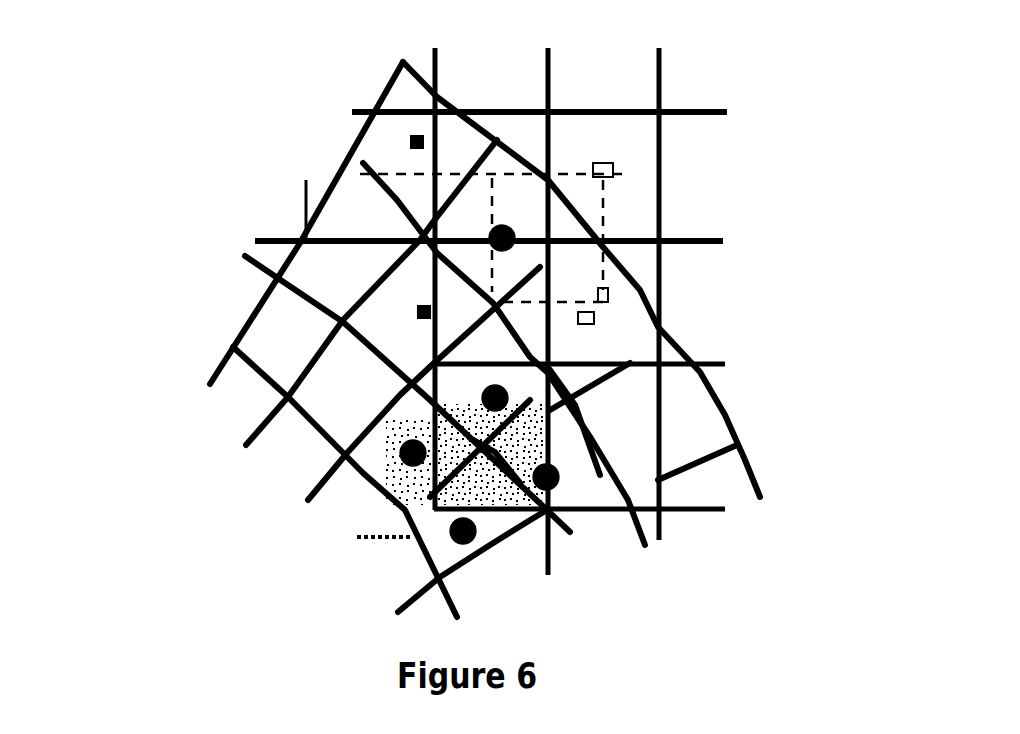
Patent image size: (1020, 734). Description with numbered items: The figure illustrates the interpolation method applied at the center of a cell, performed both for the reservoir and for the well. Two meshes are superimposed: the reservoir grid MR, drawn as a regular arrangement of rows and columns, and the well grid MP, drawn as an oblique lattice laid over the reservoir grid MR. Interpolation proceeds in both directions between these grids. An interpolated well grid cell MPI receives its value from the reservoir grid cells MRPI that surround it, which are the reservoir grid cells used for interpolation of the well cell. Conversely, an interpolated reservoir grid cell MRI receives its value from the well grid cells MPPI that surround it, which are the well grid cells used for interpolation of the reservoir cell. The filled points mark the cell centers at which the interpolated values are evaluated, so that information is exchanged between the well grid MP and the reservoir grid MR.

The well grid MP is at (218, 342).
The interpolated well grid cell MPI is at (480, 232).
The reservoir grid MR is at (715, 224).
The reservoir grid cells used for interpolation of MPI MRPI is at (628, 301).
The well grid cells used for interpolation of MRI MPPI is at (388, 472).
The interpolated reservoir grid cell MRI is at (505, 466).